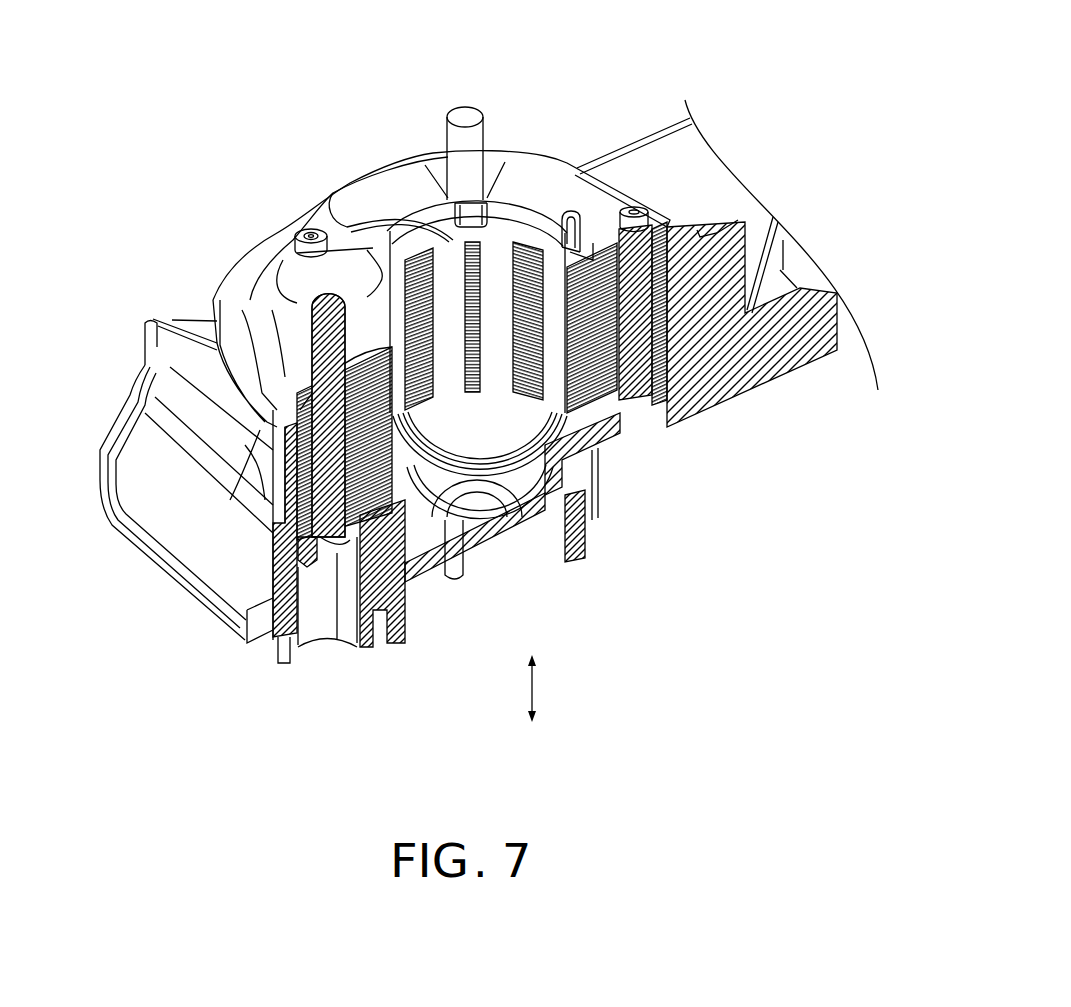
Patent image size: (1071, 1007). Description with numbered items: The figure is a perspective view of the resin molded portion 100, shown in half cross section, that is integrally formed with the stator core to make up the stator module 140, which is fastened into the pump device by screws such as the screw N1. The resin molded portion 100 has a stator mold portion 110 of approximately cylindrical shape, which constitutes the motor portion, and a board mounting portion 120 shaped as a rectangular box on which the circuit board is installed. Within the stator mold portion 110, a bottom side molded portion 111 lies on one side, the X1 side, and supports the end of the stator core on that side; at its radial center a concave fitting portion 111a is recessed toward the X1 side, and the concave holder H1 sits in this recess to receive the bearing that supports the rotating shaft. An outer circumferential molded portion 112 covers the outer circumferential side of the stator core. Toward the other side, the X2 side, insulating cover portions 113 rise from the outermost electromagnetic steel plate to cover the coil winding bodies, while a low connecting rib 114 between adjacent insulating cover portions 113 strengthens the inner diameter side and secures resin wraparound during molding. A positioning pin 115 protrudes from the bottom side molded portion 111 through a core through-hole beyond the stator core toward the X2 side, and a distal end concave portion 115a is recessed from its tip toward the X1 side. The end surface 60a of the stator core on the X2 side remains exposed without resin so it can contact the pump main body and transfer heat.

The resin molded portion 100 is at (633, 112).
The stator mold portion 110 is at (157, 390).
The bottom side molded portion 111 is at (590, 460).
The concave fitting portion 111a is at (512, 480).
The outer circumferential molded portion 112 is at (267, 440).
The insulating cover portion 113 is at (380, 190).
The connecting rib 114 is at (590, 220).
The positioning pin 115 is at (293, 227).
The distal end concave portion 115a is at (310, 230).
The board mounting portion 120 is at (624, 167).
The stator module 140 is at (238, 298).
The end surface 60a is at (657, 133).
The screw N1 is at (464, 108).
The holder H1 is at (403, 550).
The one side X1 is at (532, 732).
The other side X2 is at (532, 671).